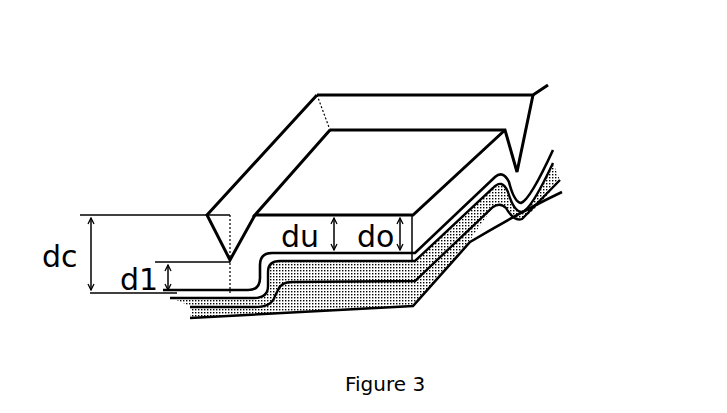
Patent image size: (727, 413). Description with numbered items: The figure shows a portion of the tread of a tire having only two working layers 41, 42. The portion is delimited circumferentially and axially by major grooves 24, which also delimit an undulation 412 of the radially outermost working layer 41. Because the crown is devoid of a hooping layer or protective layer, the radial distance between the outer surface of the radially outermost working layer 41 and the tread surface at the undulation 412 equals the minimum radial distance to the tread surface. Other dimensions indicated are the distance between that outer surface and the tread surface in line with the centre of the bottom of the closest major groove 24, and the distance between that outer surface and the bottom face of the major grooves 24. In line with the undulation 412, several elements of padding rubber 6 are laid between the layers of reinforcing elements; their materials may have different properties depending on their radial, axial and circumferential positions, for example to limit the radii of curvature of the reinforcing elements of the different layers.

The major groove 24 is at (409, 118).
The radially outermost working layer 41 is at (557, 151).
The working layer 42 is at (560, 163).
The undulation 412 is at (482, 206).
The padding rubber element 6 is at (448, 238).